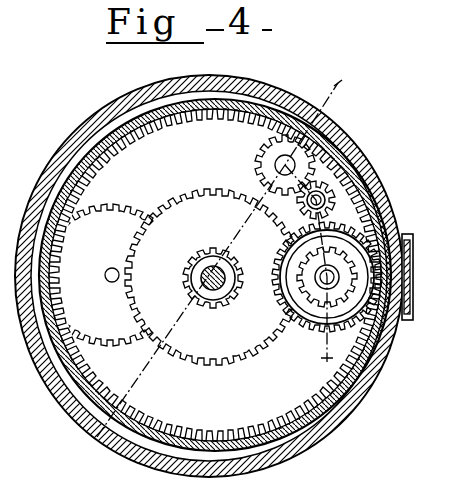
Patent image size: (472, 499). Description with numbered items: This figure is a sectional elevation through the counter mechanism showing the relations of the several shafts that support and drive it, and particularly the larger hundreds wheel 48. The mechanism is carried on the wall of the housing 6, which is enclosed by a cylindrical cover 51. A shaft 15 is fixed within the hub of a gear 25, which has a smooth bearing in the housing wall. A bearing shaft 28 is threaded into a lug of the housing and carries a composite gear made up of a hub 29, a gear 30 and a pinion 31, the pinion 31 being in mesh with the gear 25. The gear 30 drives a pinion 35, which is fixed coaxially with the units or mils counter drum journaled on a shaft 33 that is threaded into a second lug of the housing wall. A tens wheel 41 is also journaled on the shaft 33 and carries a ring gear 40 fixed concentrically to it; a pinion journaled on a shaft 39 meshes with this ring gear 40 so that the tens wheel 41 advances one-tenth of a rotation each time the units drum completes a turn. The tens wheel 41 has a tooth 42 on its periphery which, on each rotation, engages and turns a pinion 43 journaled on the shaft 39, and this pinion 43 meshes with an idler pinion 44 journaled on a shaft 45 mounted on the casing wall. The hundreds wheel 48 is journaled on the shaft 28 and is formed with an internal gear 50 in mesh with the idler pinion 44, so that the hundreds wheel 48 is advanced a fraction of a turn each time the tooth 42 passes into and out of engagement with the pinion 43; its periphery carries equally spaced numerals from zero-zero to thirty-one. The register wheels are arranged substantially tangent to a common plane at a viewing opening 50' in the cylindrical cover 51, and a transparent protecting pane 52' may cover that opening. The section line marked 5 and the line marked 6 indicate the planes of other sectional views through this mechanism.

The section line 5- 5 is at (330, 95).
The housing 6 is at (338, 85).
The shaft 15 is at (106, 279).
The gear 25 is at (110, 275).
The bearing shaft 28 is at (203, 276).
The hub 29 is at (220, 296).
The gear 30 is at (210, 365).
The pinion 31 is at (201, 305).
The shaft 33 is at (326, 284).
The pinion 35 is at (292, 308).
The shaft 39 is at (300, 204).
The ring gear 40 is at (272, 291).
The tens wheel 41 is at (300, 328).
The tooth 42 is at (274, 250).
The pinion 43 is at (300, 216).
The idler pinion 44 is at (258, 159).
The shaft 45 is at (276, 169).
The hundreds wheel 48 is at (282, 421).
The internal gear 50 is at (215, 275).
The cylindrical cover 51 is at (81, 418).
The transparent protecting pane 52' is at (426, 277).
The viewing opening 50' is at (427, 277).